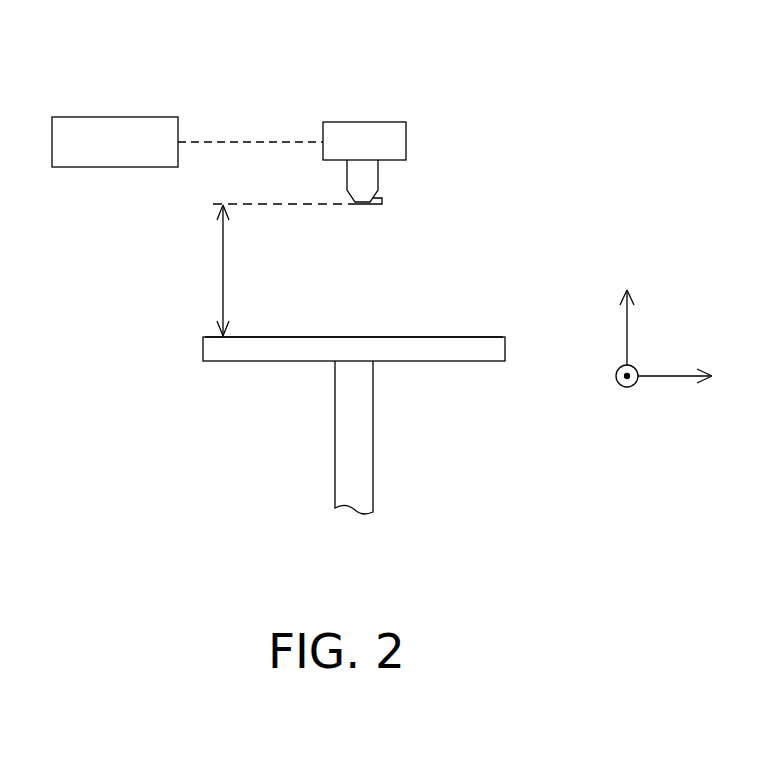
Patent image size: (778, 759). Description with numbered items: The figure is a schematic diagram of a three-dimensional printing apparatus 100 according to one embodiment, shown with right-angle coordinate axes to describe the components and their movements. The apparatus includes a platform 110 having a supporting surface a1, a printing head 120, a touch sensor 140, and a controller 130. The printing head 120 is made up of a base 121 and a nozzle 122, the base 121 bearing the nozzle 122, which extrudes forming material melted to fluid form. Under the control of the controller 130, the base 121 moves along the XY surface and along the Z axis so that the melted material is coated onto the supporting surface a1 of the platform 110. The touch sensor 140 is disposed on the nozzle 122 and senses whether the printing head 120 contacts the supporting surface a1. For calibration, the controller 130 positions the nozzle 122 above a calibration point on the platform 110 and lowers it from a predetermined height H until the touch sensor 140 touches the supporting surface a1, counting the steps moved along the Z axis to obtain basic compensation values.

The 3D printing apparatus 100 is at (628, 526).
The platform 110 is at (505, 347).
The printing head 120 is at (496, 108).
The base 121 is at (397, 137).
The nozzle 122 is at (367, 184).
The controller 130 is at (115, 117).
The touch sensor 140 is at (382, 202).
The supporting surface a1 is at (462, 337).